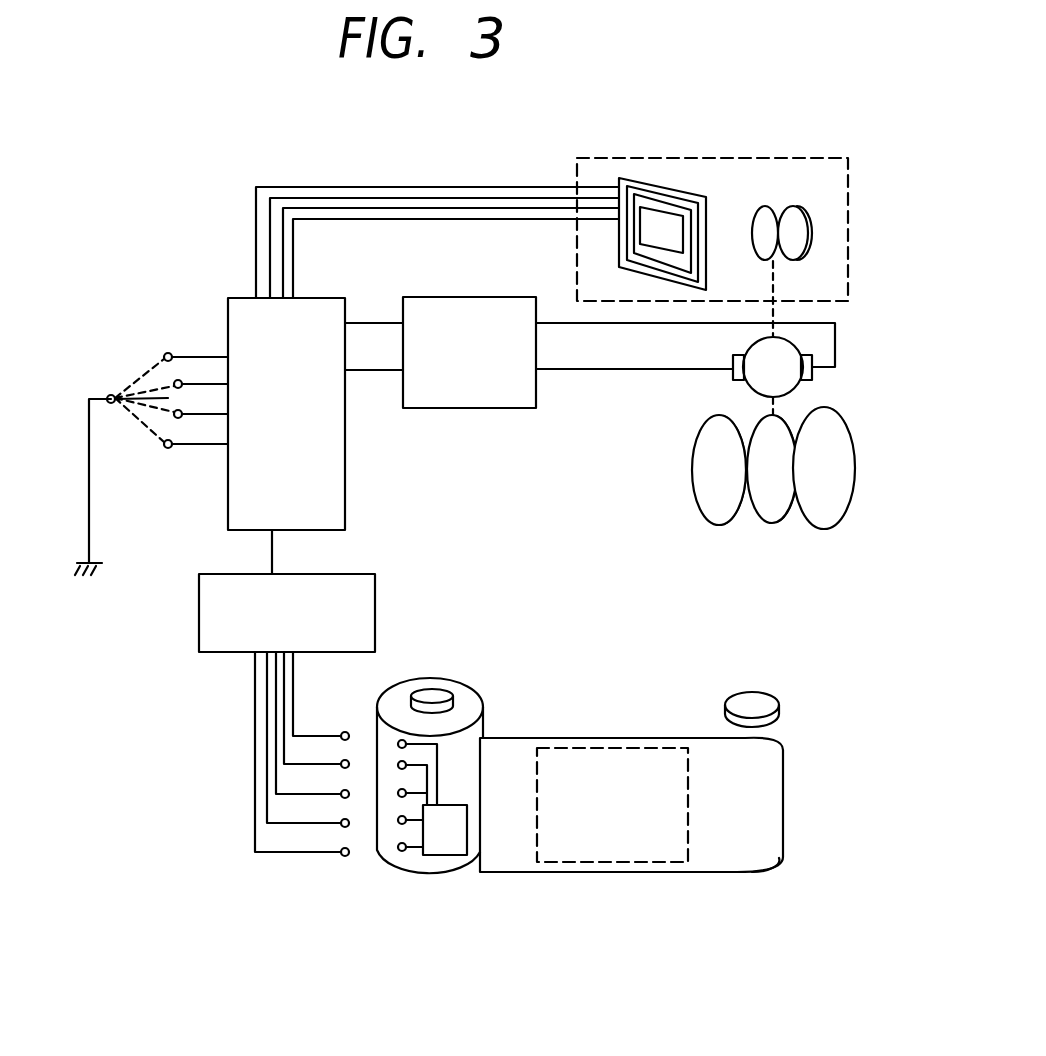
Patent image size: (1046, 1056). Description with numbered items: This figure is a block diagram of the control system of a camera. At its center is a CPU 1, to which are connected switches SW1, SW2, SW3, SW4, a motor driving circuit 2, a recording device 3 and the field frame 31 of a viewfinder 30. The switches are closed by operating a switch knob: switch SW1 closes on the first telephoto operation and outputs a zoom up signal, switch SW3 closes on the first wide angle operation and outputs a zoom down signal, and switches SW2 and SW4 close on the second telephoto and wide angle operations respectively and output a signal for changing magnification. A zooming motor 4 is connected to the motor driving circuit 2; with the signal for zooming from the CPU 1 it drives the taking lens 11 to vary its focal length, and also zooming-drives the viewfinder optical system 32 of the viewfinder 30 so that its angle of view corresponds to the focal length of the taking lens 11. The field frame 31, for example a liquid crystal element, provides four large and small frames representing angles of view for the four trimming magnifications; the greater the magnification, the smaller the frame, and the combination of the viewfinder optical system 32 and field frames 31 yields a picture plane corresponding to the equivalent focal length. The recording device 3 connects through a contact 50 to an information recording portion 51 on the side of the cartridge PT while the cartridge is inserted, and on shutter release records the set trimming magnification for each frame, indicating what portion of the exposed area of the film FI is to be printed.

The CPU 1 is at (345, 308).
The motor driving circuit 2 is at (542, 306).
The recording device 3 is at (378, 587).
The zooming motor 4 is at (747, 350).
The taking lens 11 is at (752, 527).
The viewfinder 30 is at (849, 199).
The field frame 31 is at (669, 188).
The viewfinder optical system 32 is at (790, 207).
The contact 50 is at (352, 832).
The information recording portion 51 is at (450, 856).
The switch SW1 is at (182, 377).
The switch SW2 is at (165, 350).
The switch SW3 is at (182, 422).
The switch SW4 is at (165, 453).
The cartridge PT is at (410, 678).
The film FI is at (627, 873).